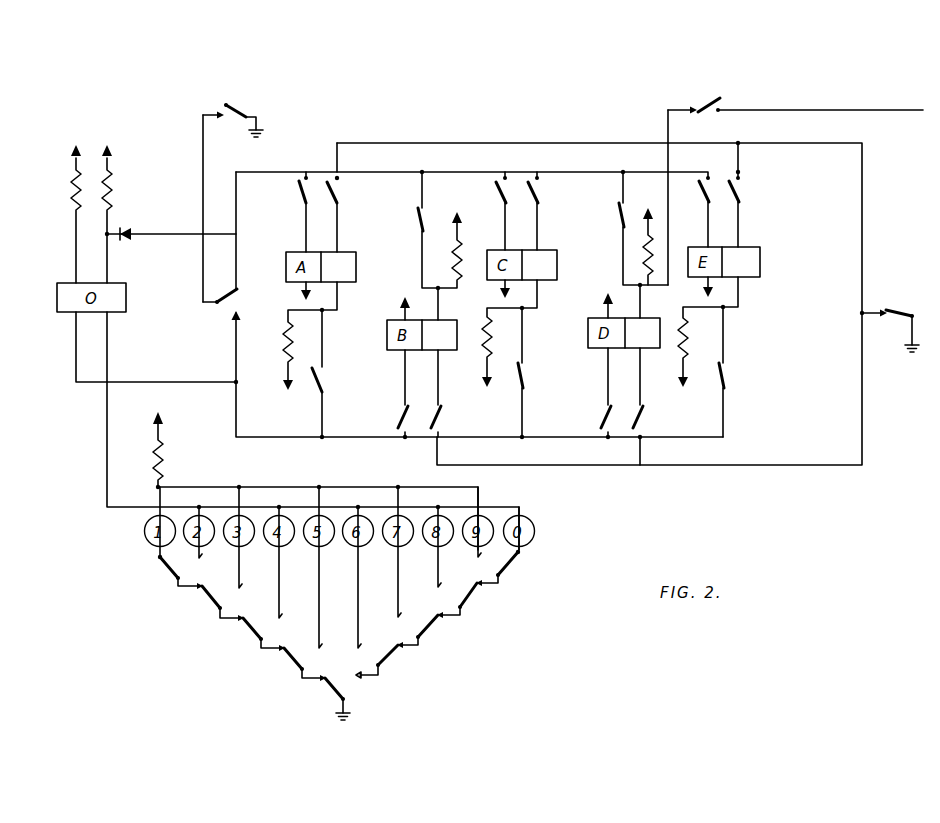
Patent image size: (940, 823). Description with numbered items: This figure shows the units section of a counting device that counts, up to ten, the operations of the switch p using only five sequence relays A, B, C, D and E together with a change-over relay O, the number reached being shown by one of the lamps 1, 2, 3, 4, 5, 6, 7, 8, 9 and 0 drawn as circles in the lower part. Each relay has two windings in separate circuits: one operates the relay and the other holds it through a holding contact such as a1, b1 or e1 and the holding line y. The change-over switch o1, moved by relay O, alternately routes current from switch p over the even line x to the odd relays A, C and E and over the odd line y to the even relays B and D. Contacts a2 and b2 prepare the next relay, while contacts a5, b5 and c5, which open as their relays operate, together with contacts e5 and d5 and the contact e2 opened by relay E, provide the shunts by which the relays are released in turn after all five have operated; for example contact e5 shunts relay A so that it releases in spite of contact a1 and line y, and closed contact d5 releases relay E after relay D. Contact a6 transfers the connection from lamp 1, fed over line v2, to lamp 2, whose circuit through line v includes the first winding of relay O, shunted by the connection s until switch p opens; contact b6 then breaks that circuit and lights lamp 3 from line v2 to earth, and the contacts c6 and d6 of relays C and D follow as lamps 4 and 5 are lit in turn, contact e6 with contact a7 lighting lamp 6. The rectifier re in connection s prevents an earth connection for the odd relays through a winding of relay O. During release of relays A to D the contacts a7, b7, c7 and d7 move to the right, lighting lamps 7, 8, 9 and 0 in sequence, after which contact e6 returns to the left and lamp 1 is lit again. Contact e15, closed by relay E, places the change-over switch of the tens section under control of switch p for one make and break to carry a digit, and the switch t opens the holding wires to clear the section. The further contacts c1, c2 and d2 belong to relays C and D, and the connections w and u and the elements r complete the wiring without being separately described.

The switch p is at (233, 196).
The change-over switch o1 is at (234, 298).
The supply line w is at (283, 172).
The even line x is at (304, 440).
The holding line y is at (487, 143).
The contact e15 is at (795, 187).
The switch t is at (889, 318).
The resistors r is at (98, 214).
The rectifier re is at (123, 244).
The connection s is at (176, 234).
The line u is at (76, 340).
The line v is at (107, 341).
The line v2 is at (374, 487).
The contact e2 is at (290, 212).
The holding contact a1 is at (345, 217).
The contact a5 is at (425, 229).
The contact b2 is at (491, 211).
The relay C contact c1 is at (597, 318).
The contact c5 is at (629, 227).
The relay D contact d2 is at (696, 211).
The holding contact e1 is at (747, 211).
The contact e5 is at (330, 373).
The contact a2 is at (390, 394).
The holding contact b1 is at (450, 393).
The contact b5 is at (535, 372).
The relay C contact c2 is at (593, 393).
The contact d5 is at (735, 371).
The contact a6 is at (175, 571).
The contact b6 is at (212, 600).
The relay C contact c6 is at (252, 631).
The relay D contact d6 is at (296, 661).
The contact e6 is at (329, 697).
The contact a7 is at (383, 660).
The contact b7 is at (426, 628).
The contact c7 is at (464, 597).
The contact d7 is at (506, 566).
The lamp 1 is at (718, 289).
The lamp 2 is at (317, 241).
The lamp 3 is at (444, 303).
The lamp 4 is at (521, 238).
The lamp 5 is at (645, 300).
The lamp 6 is at (723, 237).
The lamp 7 is at (315, 293).
The lamp 8 is at (419, 364).
The lamp 9 is at (516, 291).
The lamp 0 is at (622, 361).